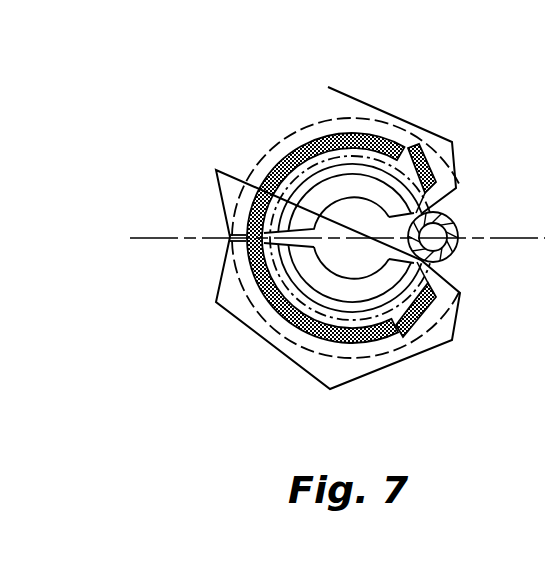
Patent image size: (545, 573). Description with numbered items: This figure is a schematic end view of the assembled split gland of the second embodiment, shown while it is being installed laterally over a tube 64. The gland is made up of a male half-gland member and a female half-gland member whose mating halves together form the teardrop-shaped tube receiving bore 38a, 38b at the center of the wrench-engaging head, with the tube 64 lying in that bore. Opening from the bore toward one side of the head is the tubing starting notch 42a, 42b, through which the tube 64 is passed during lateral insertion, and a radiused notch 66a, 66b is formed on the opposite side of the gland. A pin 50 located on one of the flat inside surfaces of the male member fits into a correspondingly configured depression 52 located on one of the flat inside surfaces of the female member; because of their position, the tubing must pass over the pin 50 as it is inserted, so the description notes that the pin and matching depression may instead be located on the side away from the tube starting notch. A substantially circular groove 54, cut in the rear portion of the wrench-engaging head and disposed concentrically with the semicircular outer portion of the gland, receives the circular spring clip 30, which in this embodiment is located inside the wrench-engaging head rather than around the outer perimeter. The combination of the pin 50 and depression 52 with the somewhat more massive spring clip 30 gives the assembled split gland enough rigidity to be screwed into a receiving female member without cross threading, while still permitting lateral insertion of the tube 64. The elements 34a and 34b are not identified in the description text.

The circular spring clip 30 is at (250, 300).
The upper jaw arc 34a is at (283, 172).
The lower jaw arc 34b is at (317, 367).
The teardrop-shaped tube receiving bore 38a is at (333, 190).
The teardrop-shaped tube receiving bore 38b is at (370, 278).
The tubing starting notch 42a is at (438, 203).
The tubing starting notch 42b is at (440, 272).
The pin 50 is at (445, 268).
The correspondingly configured depression 52 is at (403, 148).
The groove 54 is at (277, 347).
The tube 64 is at (459, 232).
The radiused notch 66a is at (227, 233).
The radiused notch 66b is at (227, 242).